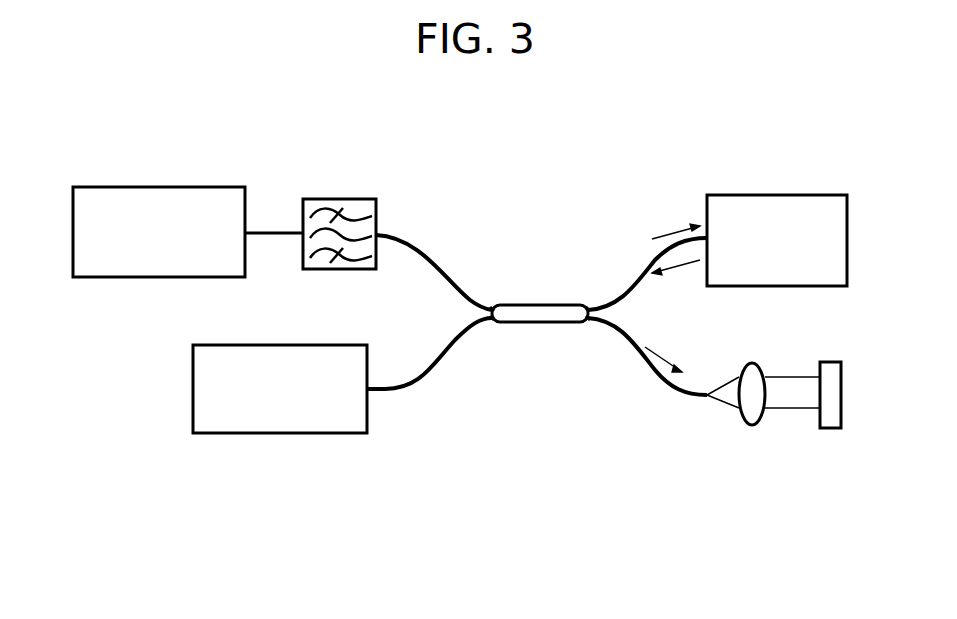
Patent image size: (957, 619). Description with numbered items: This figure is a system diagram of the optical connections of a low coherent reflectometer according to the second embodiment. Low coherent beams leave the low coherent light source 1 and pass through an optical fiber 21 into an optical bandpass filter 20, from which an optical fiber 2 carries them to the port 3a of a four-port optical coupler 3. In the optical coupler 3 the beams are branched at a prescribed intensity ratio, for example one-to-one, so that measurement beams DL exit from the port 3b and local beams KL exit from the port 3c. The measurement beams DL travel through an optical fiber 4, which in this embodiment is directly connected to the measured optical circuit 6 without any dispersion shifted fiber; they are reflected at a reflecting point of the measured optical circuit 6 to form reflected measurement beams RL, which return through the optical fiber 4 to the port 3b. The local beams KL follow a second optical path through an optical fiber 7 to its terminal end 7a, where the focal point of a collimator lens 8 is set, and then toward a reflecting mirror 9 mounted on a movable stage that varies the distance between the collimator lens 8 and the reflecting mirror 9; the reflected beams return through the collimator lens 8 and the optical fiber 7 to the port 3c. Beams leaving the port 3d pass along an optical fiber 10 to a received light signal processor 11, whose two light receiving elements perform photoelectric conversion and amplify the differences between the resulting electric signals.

The low coherent light source 1 is at (170, 187).
The optical fiber 21 is at (275, 230).
The optical bandpass filter 20 is at (348, 199).
The optical fiber 2 is at (425, 260).
The optical coupler 3 is at (537, 305).
The port 3a is at (492, 305).
The port 3b is at (590, 305).
The port 3c is at (590, 322).
The port 3d is at (490, 322).
The optical fiber 4 is at (645, 268).
The measurement beams DL is at (672, 230).
The reflected measurement beams RL is at (682, 268).
The measured optical circuit 6 is at (765, 195).
The received light signal processor 11 is at (272, 345).
The optical fiber 10 is at (430, 362).
The optical fiber 7 is at (660, 378).
The local beams KL is at (684, 332).
The terminal end 7a is at (709, 400).
The collimator lens 8 is at (755, 363).
The reflecting mirror 9 is at (830, 362).